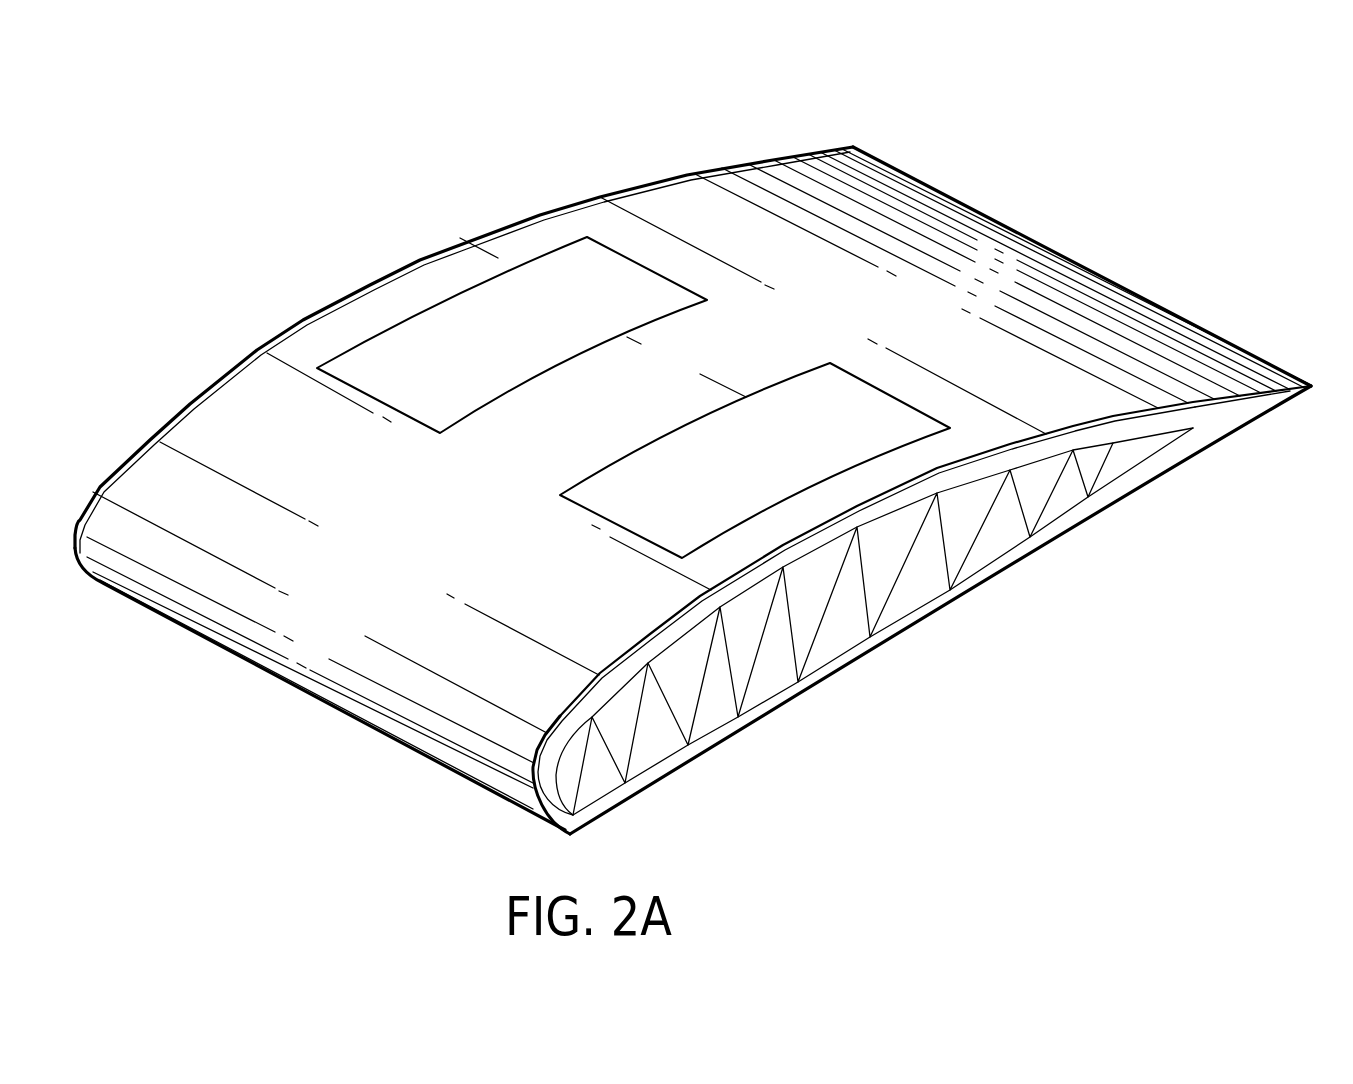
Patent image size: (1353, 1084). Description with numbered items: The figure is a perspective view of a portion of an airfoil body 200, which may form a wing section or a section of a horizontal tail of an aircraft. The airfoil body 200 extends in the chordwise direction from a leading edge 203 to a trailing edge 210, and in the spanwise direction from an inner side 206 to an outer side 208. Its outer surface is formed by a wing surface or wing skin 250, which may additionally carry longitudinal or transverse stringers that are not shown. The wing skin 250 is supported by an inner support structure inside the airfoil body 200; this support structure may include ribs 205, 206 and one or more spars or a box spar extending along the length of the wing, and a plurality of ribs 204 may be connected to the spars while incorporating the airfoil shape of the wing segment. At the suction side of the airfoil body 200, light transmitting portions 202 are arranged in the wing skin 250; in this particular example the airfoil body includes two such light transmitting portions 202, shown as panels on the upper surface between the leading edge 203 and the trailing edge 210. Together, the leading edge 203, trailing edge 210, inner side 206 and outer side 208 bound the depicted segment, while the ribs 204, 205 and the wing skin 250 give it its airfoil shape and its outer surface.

The airfoil body 200 is at (1128, 238).
The light transmitting portions 202 is at (457, 322).
The leading edge 203 is at (308, 640).
The ribs 204 is at (1230, 412).
The rib 205 is at (192, 404).
The inner side 206 is at (720, 168).
The outer side 208 is at (1227, 399).
The trailing edge 210 is at (958, 200).
The wing skin 250 is at (812, 509).